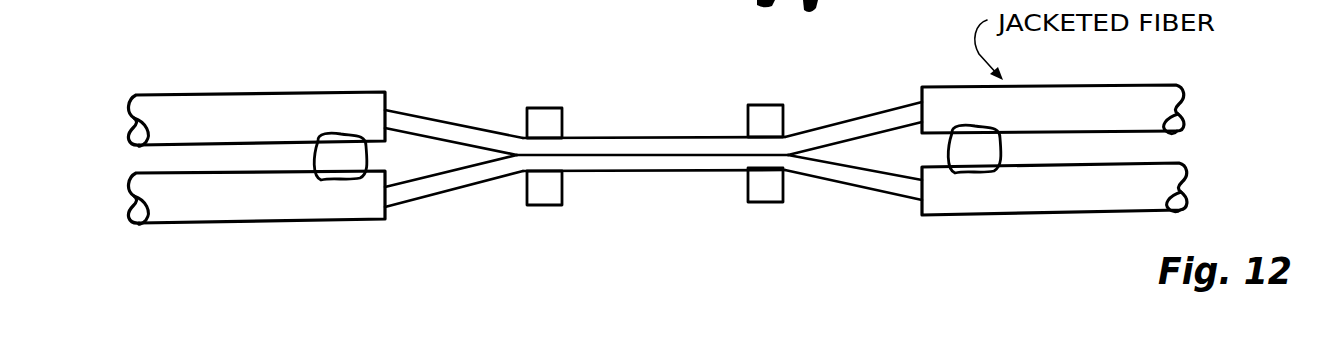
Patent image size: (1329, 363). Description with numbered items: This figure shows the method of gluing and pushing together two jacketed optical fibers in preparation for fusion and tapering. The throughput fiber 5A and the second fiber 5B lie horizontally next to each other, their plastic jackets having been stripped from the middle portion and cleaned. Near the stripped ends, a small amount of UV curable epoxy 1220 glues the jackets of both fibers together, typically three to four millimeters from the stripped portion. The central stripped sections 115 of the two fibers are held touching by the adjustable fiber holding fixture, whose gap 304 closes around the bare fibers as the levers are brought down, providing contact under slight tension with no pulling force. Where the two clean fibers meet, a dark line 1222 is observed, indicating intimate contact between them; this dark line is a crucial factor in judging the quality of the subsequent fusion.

The throughput fiber 5A is at (257, 93).
The second optical fiber 5B is at (170, 222).
The epoxy 1220 is at (335, 160).
The dark line 1222 is at (648, 151).
The gap 304 is at (767, 105).
The central stripped sections 115 is at (623, 196).